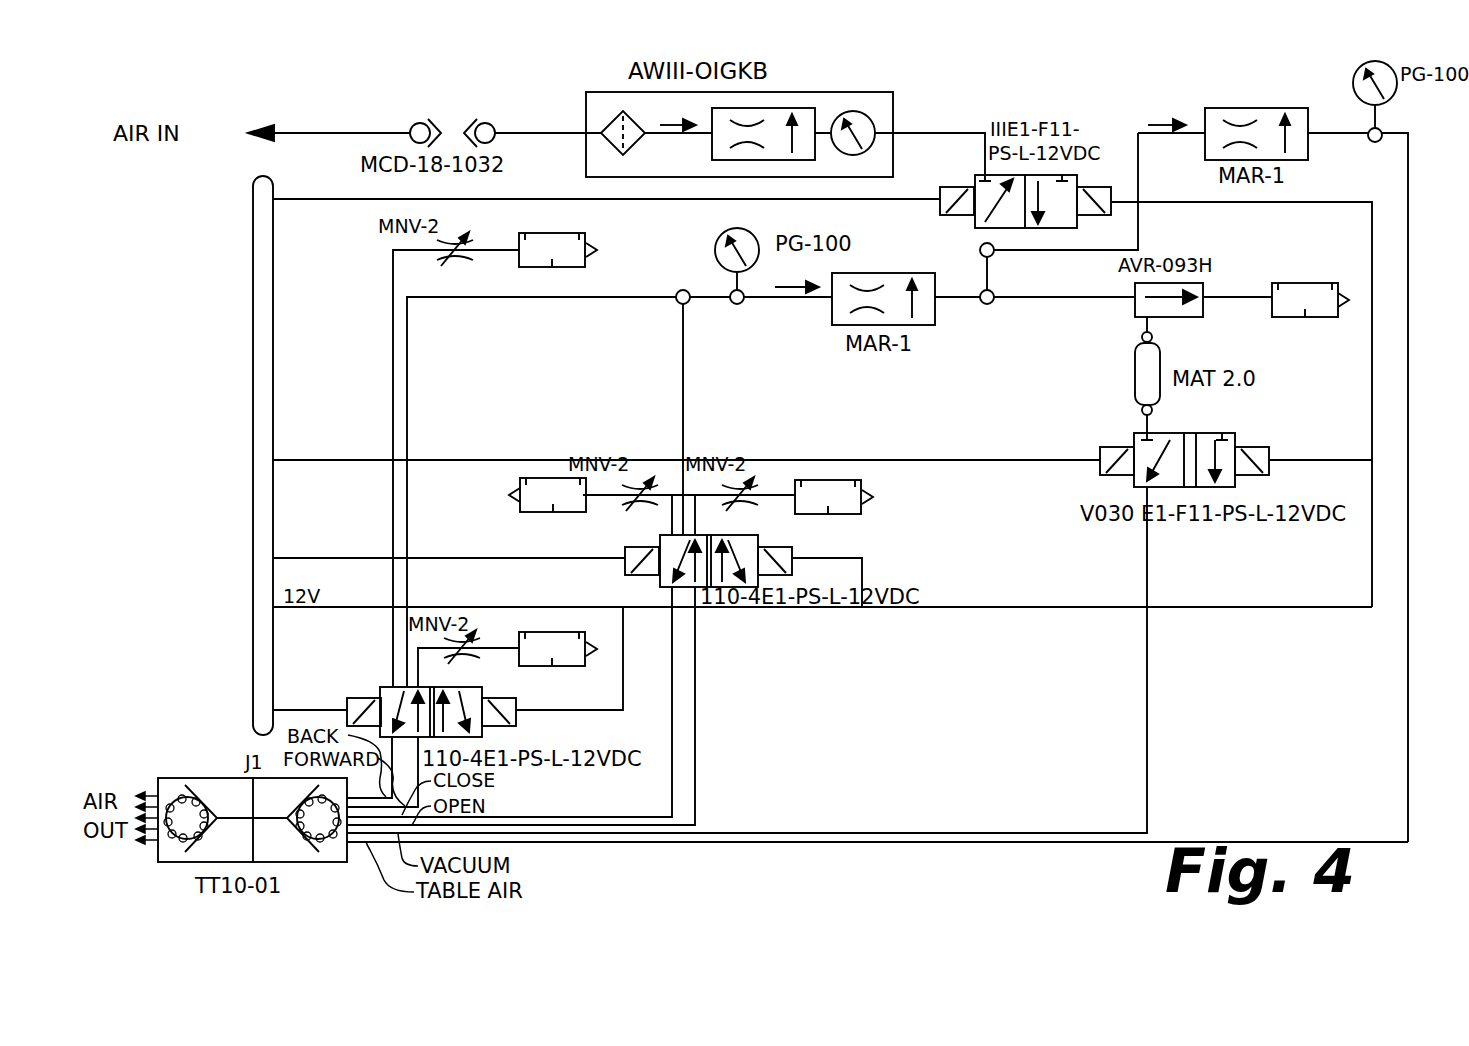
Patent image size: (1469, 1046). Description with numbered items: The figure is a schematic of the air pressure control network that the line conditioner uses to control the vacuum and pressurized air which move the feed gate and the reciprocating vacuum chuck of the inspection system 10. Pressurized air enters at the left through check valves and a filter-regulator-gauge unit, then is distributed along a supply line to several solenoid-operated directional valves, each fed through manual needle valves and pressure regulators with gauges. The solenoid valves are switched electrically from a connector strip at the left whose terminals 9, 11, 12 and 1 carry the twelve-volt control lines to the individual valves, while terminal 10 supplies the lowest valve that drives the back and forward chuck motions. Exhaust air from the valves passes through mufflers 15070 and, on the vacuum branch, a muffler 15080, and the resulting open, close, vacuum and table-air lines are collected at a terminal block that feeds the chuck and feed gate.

The J1 connector pin 9 line 9 is at (598, 198).
The inspection system 10 is at (300, 708).
The J1 connector pin 11 line 11 is at (677, 458).
The J1 connector pin 12 line 12 is at (439, 558).
The J1 connector pin 1 (12V) line 1 is at (815, 607).
The flow control / muffler 15070 is at (691, 465).
The flow control / muffler 15080 is at (1306, 317).